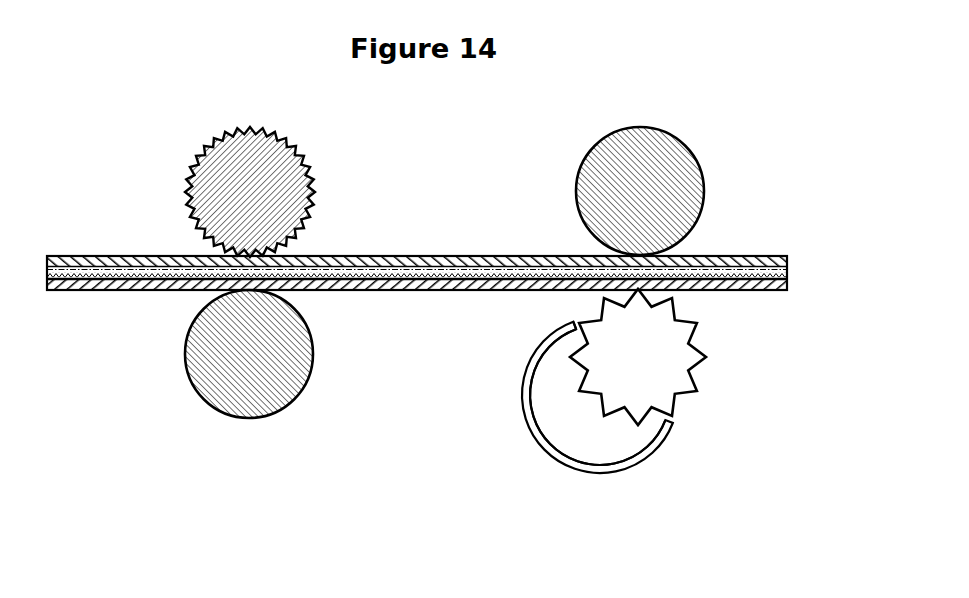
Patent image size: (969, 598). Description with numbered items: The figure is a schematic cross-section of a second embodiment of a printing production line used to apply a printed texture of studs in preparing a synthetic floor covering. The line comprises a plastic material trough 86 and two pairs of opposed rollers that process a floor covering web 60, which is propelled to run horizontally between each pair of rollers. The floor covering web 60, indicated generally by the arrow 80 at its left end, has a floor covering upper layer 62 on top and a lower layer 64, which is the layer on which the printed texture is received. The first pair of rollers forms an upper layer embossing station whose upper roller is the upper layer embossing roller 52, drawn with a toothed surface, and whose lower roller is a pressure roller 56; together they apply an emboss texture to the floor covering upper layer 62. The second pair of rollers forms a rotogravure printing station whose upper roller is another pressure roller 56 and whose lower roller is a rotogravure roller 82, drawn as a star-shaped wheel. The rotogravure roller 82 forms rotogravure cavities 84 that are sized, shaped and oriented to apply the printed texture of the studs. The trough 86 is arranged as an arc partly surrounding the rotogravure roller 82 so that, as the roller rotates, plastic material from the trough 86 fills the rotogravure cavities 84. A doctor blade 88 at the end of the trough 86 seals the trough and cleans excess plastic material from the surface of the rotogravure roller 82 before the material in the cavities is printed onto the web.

The upper layer embossing roller 52 is at (267, 163).
The pressure roller 56 is at (641, 198).
The floor covering web 60 is at (410, 253).
The floor covering upper layer 62 is at (450, 272).
The second layer of laminate 64 is at (770, 291).
The laminating assembly 80 is at (135, 229).
The rotogravure roller 82 is at (668, 377).
The rotogravure cavities 84 is at (583, 370).
The plastic material trough 86 is at (588, 468).
The doctor blade 88 is at (572, 323).